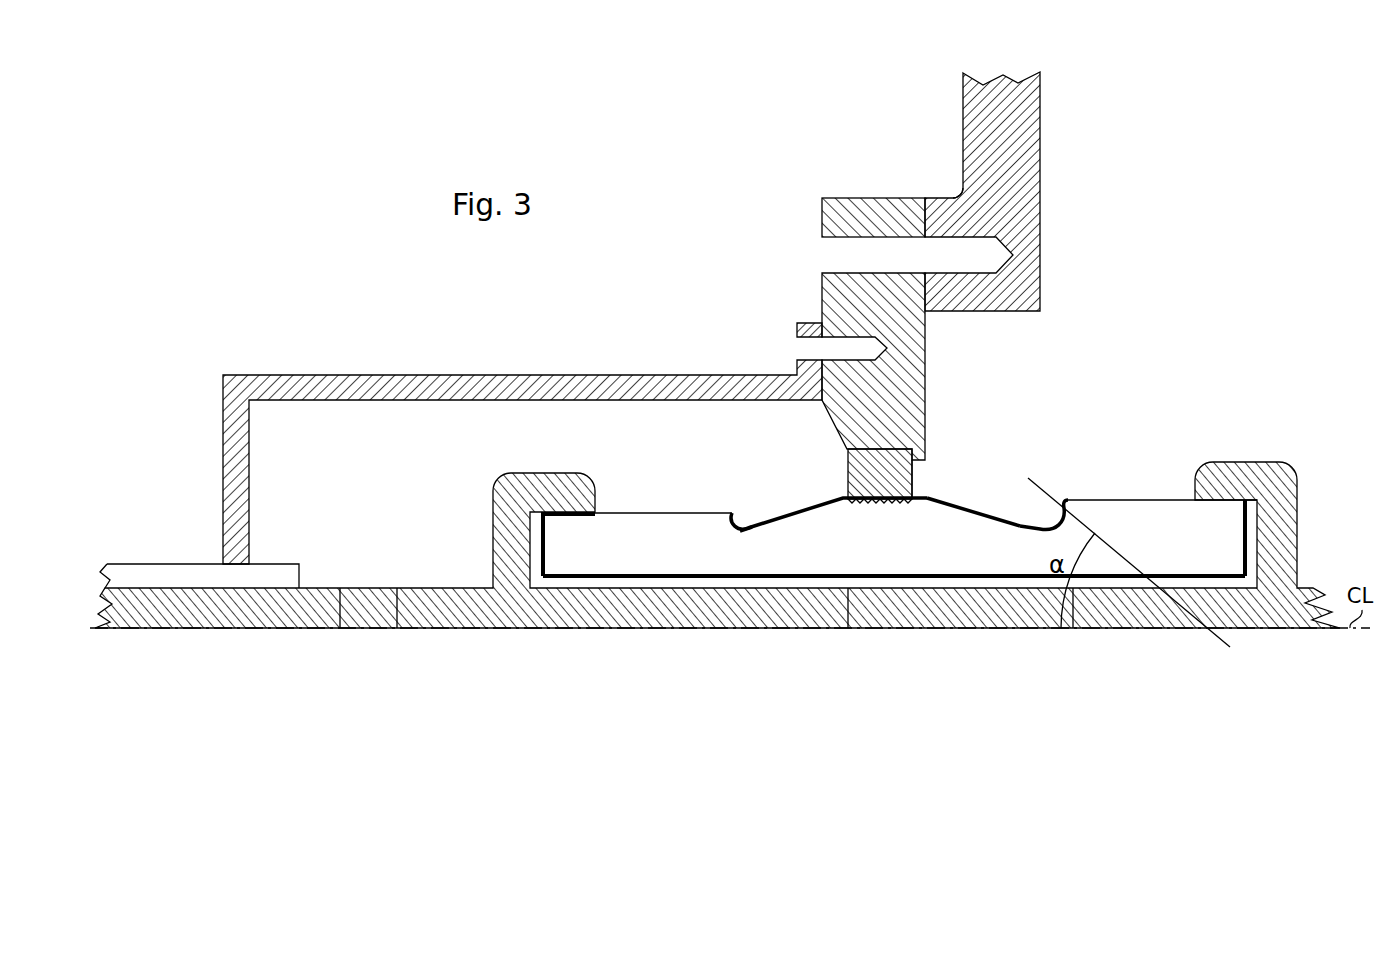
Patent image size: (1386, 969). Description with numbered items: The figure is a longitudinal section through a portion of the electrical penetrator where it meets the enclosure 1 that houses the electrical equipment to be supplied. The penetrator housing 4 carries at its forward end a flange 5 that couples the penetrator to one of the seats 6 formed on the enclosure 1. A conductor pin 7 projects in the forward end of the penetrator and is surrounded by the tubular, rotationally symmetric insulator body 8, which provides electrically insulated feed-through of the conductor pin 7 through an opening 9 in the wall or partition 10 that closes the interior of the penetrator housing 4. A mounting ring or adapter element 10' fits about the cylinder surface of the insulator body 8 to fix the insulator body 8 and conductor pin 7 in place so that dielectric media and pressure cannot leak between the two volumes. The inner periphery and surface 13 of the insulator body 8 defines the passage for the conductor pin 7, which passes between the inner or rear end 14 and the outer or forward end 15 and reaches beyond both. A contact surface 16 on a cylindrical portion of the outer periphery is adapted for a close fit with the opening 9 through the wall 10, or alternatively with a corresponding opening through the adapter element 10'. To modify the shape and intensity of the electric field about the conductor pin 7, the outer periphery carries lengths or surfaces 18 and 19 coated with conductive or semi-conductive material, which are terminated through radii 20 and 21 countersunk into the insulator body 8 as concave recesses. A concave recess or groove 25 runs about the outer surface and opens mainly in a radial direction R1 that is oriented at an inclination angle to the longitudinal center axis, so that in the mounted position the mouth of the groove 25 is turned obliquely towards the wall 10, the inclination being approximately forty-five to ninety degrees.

The enclosure 1 is at (1063, 103).
The penetrator housing 4 is at (430, 375).
The flange 5 is at (816, 201).
The seat 6 is at (949, 180).
The conductor pin 7 is at (455, 588).
The insulator body 8 is at (662, 538).
The opening 9 is at (883, 448).
The wall or partition 10 is at (832, 360).
The mounting ring or adapter element 10' is at (951, 478).
The inner periphery and surface 13 is at (657, 563).
The inner or rear end 14 is at (535, 534).
The outer or forward end 15 is at (1259, 537).
The contact surface 16 is at (861, 489).
The coated length or surface 18 is at (798, 503).
The coated length or surface 19 is at (998, 506).
The radius 20 is at (736, 541).
The radius 21 is at (1077, 508).
The concave recess or groove 25 is at (745, 525).
The radial direction R1 is at (1057, 497).